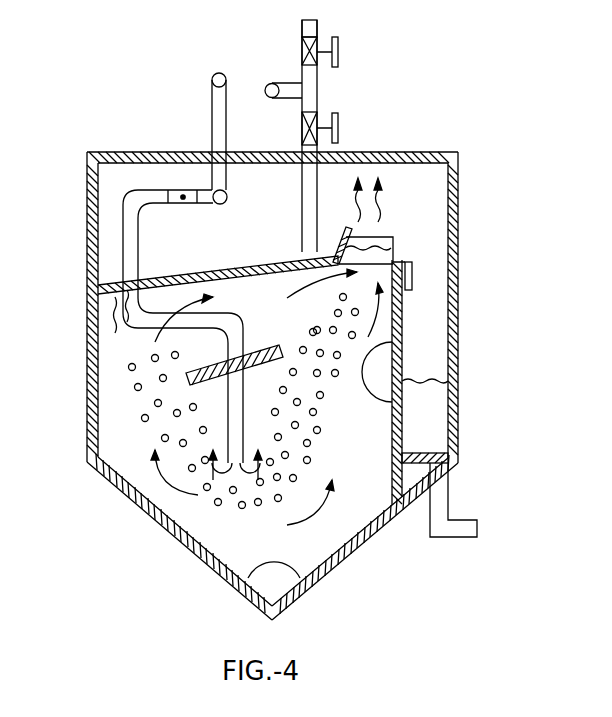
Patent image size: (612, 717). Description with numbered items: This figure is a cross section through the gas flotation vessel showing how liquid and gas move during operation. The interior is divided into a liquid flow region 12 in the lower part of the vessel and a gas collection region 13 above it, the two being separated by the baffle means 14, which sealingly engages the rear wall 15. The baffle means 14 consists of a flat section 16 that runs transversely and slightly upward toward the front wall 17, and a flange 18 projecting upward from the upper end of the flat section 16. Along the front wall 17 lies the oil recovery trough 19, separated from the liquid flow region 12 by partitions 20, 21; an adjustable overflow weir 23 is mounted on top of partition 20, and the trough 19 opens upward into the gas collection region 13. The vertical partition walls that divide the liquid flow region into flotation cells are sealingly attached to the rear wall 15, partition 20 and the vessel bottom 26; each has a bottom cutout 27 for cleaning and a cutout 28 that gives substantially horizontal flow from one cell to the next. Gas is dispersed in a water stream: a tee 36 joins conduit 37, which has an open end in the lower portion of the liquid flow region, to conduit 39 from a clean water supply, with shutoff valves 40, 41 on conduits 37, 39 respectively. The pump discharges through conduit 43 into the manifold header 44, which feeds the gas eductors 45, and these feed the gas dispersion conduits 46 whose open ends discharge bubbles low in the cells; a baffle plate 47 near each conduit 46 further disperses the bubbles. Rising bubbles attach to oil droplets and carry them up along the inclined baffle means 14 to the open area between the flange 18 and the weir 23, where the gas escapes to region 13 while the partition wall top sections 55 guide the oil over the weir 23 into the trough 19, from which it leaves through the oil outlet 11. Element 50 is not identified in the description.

The oil outlet 11 is at (437, 538).
The liquid flow region 12 is at (316, 567).
The gas collection region 13 is at (211, 248).
The baffle means 14 is at (170, 273).
The rear wall 15 is at (86, 248).
The flat section 16 is at (185, 278).
The front wall 17 is at (458, 437).
The flange 18 is at (340, 246).
The oil recovery trough 19 is at (436, 358).
The partition 20 is at (400, 456).
The partition 21 is at (427, 452).
The adjustable overflow weir 23 is at (412, 284).
The vessel bottom 26 is at (183, 541).
The bottom cutout 27 is at (268, 565).
The cutout 28 is at (373, 395).
The tee 36 is at (319, 90).
The conduit 37 is at (302, 200).
The conduit 39 is at (318, 31).
The shutoff valve 40 is at (340, 126).
The shutoff valve 41 is at (340, 47).
The conduit 43 is at (212, 117).
The manifold header 44 is at (247, 222).
The gas eductor 45 is at (170, 190).
The gas dispersion conduit 46 is at (243, 318).
The baffle plate 47 is at (276, 352).
The nozzle 50 is at (183, 200).
The partition wall top section 55 is at (388, 237).